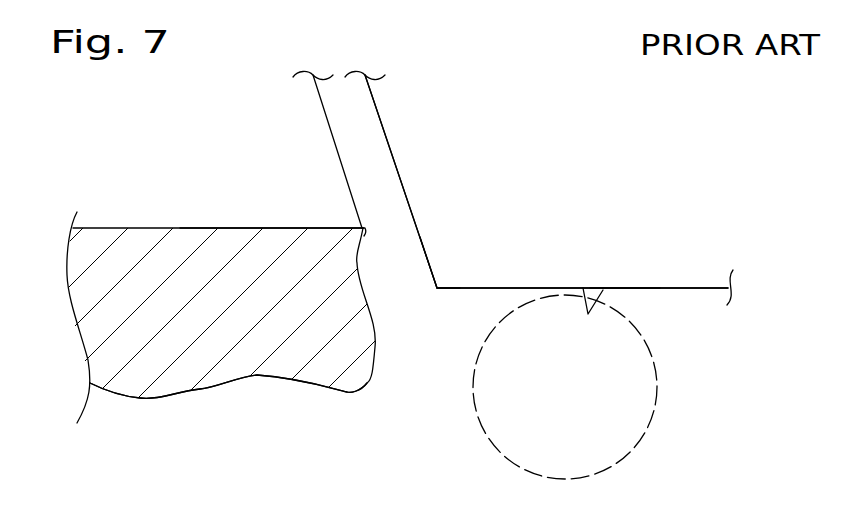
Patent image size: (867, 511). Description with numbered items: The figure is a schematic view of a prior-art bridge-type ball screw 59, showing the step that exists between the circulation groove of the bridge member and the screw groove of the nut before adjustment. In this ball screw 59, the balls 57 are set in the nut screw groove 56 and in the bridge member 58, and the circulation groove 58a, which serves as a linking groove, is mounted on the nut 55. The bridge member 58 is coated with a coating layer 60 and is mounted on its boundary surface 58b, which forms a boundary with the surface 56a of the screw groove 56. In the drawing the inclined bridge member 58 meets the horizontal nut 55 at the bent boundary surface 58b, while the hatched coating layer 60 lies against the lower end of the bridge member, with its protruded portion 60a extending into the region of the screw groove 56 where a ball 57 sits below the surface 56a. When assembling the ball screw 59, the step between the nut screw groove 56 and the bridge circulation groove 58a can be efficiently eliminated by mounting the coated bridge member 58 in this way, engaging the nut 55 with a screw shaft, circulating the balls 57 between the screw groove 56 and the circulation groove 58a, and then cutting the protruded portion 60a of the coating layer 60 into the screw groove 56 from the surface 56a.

The nut 55 is at (683, 292).
The nut screw groove 56 is at (622, 292).
The surface of the screw groove 56a is at (583, 288).
The balls 57 is at (650, 422).
The bridge member 58 is at (340, 150).
The circulation groove 58a is at (198, 232).
The boundary surface 58b is at (358, 238).
The ball screw 59 is at (610, 152).
The coating layer 60 is at (123, 290).
The protruded portion 60a is at (277, 367).